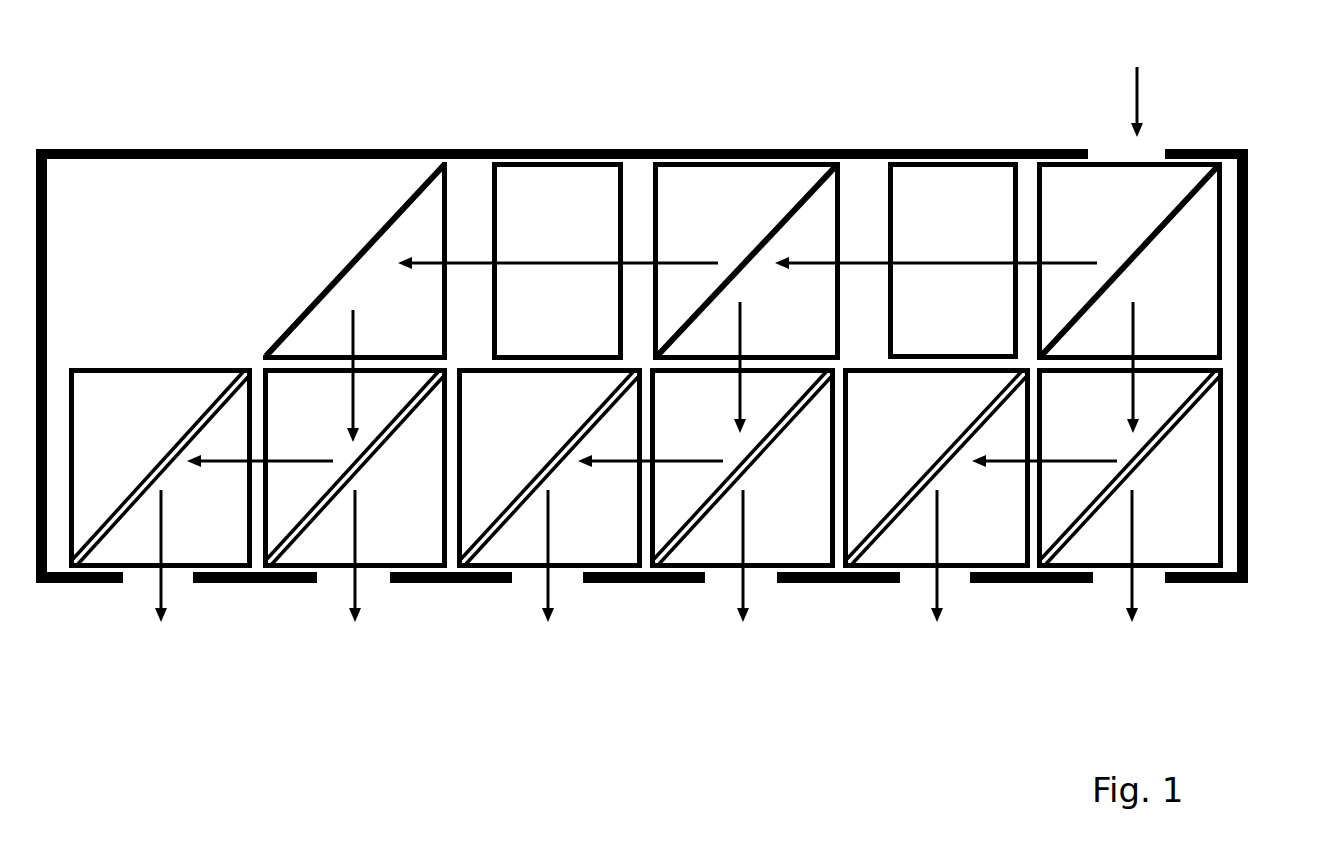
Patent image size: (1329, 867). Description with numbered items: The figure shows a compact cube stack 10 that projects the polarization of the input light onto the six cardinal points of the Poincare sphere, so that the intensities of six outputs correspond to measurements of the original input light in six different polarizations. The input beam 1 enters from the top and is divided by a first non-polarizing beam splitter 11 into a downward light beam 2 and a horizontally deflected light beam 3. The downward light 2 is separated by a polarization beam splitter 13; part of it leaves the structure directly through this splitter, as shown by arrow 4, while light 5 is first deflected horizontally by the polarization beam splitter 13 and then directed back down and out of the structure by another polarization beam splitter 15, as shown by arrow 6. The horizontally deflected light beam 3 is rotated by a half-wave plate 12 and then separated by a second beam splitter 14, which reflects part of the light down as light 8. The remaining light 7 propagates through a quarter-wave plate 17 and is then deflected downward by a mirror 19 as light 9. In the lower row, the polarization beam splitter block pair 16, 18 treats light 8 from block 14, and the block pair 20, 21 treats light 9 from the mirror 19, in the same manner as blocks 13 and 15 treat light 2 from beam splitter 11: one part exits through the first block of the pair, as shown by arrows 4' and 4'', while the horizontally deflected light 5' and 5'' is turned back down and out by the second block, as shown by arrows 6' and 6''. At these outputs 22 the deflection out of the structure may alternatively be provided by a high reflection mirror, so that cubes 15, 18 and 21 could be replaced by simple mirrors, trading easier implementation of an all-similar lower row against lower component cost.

The input beam 1 is at (1135, 103).
The light beam 2 is at (1137, 330).
The light beam 3 is at (1169, 219).
The output arrow 4 is at (1153, 594).
The output arrow 4' is at (748, 594).
The output arrow 4'' is at (375, 594).
The light 5 is at (1047, 576).
The light 5' is at (650, 576).
The light 5'' is at (261, 576).
The output arrow 6 is at (912, 594).
The output arrow 6' is at (559, 594).
The output arrow 6'' is at (180, 594).
The light 7 is at (628, 258).
The light 8 is at (742, 335).
The light 9 is at (348, 410).
The cube stack 10 is at (143, 150).
The first non-polarizing beam splitter 11 is at (1173, 240).
The half-wave plate 12 is at (953, 230).
The polarization beam splitter 13 is at (1180, 473).
The second beam splitter 14 is at (723, 238).
The polarization beam splitter 15 is at (1144, 535).
The polarization beam splitter block 16 is at (775, 522).
The quarter-wave plate 17 is at (532, 240).
The polarization beam splitter block 18 is at (592, 532).
The mirror 19 is at (372, 230).
The polarization beam splitter block 20 is at (408, 525).
The polarization beam splitter block 21 is at (225, 532).
The outputs 22 is at (142, 590).